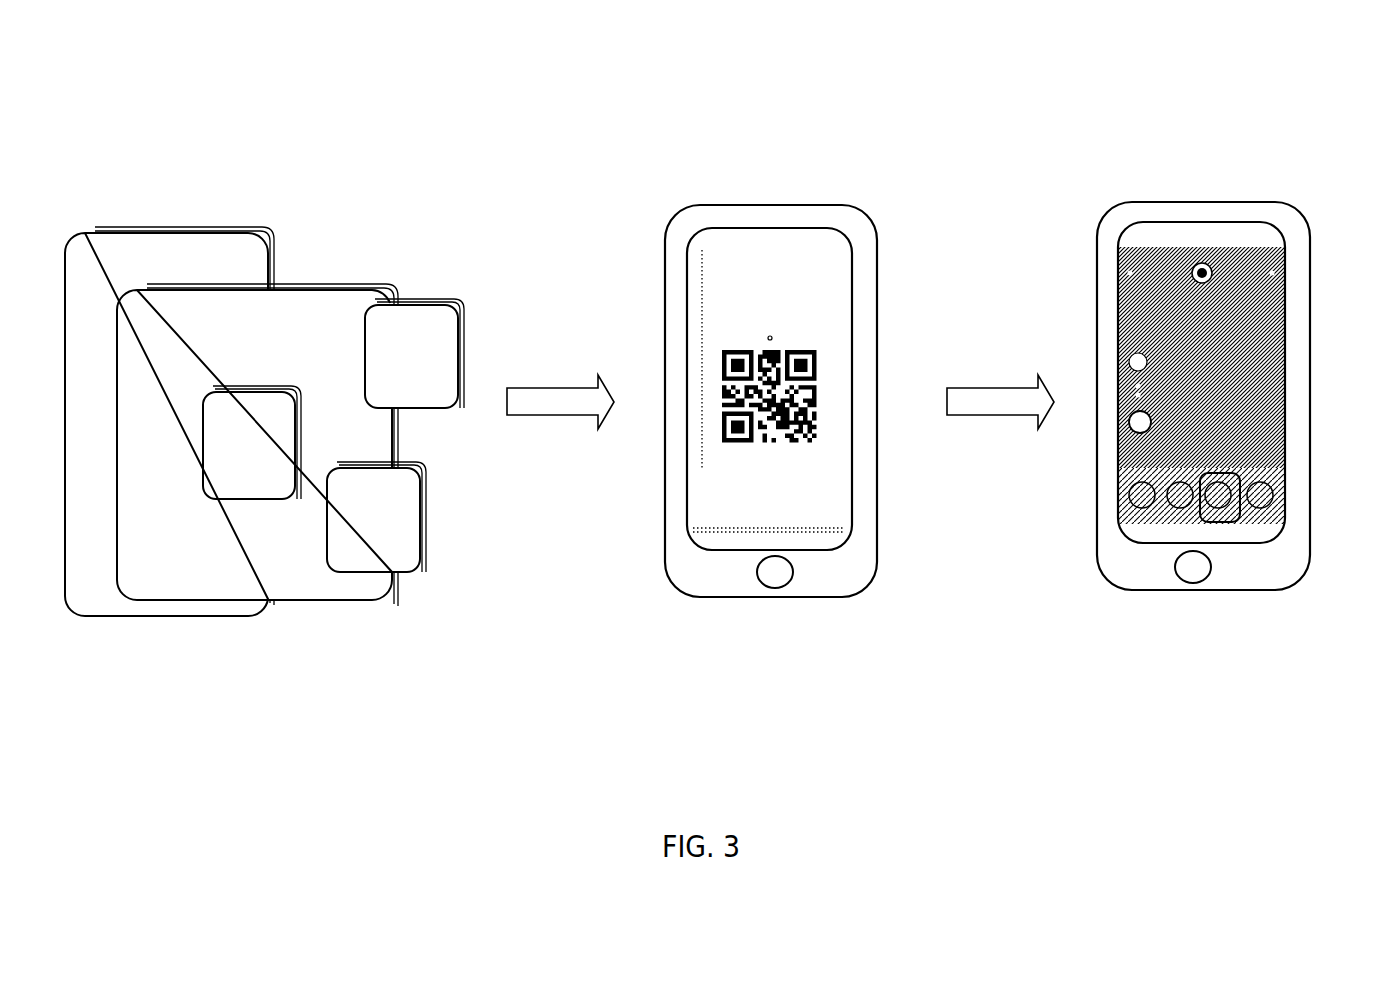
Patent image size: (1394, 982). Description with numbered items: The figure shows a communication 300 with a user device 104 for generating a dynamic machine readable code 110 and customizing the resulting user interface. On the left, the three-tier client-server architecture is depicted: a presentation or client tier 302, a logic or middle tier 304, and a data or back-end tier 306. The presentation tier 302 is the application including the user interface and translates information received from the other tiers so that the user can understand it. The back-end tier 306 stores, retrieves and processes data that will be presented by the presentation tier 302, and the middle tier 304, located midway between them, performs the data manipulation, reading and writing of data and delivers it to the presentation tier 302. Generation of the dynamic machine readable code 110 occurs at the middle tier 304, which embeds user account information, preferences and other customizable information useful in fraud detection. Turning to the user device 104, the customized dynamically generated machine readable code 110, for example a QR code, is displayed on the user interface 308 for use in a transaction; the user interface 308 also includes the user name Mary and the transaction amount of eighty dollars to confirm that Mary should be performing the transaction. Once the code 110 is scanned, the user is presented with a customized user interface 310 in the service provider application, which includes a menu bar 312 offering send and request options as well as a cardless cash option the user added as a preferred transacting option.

The communication for generating a dynamic machine readable code 300 is at (1165, 115).
The presentation tier 302 is at (268, 237).
The middle tier 304 is at (352, 291).
The back-end tier 306 is at (458, 340).
The user device 104 is at (877, 257).
The user interface 308 is at (825, 236).
The dynamic machine readable code 110 is at (838, 390).
The customized user interface 310 is at (1285, 343).
The menu bar 312 is at (1250, 465).